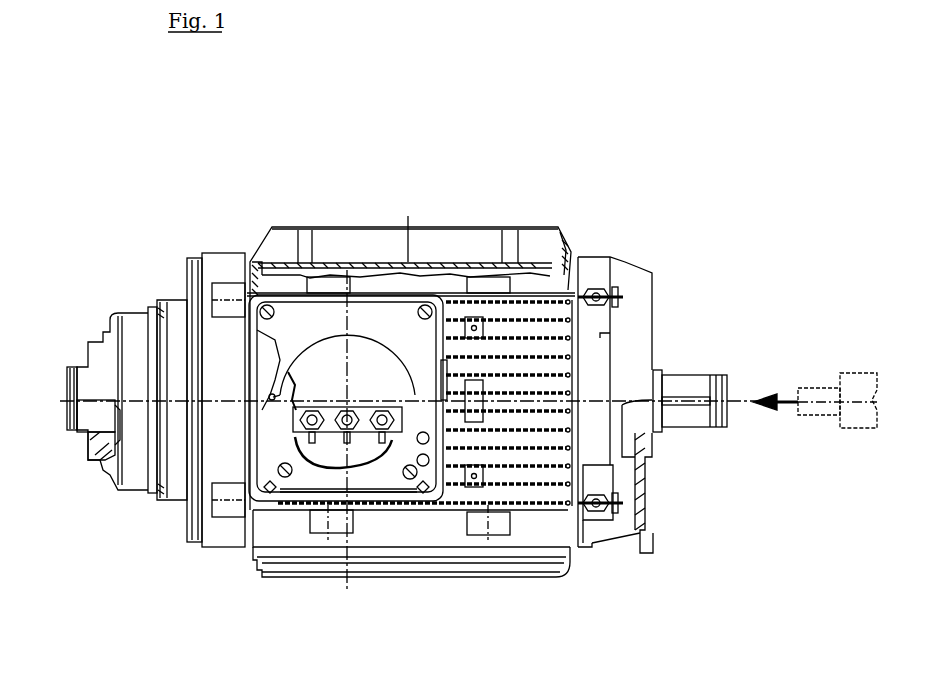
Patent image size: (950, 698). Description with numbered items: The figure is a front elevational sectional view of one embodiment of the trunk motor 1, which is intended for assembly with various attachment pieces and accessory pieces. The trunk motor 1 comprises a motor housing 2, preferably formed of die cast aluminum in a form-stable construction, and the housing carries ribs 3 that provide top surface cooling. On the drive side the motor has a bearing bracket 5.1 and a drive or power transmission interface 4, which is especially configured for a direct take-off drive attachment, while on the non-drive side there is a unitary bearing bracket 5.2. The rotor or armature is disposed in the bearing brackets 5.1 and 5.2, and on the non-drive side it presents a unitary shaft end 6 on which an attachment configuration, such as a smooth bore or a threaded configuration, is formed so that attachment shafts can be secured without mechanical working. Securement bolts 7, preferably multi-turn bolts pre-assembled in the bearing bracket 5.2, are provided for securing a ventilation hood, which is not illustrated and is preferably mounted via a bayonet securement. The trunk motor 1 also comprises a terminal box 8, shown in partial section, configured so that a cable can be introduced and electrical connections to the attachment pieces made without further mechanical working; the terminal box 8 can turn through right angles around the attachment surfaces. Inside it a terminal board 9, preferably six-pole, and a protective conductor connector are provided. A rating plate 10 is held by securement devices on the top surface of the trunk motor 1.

The trunk motor 1 is at (430, 188).
The motor housing 2 is at (481, 291).
The ribs 3 is at (561, 348).
The drive or power transmission interface 4 is at (80, 475).
The bearing bracket 5.1 is at (221, 532).
The unitary bearing bracket 5.2 is at (637, 342).
The shaft end 6 is at (678, 420).
The securement bolts 7 is at (601, 290).
The terminal box 8 is at (314, 316).
The terminal board 9 is at (318, 433).
The rating plate 10 is at (351, 227).